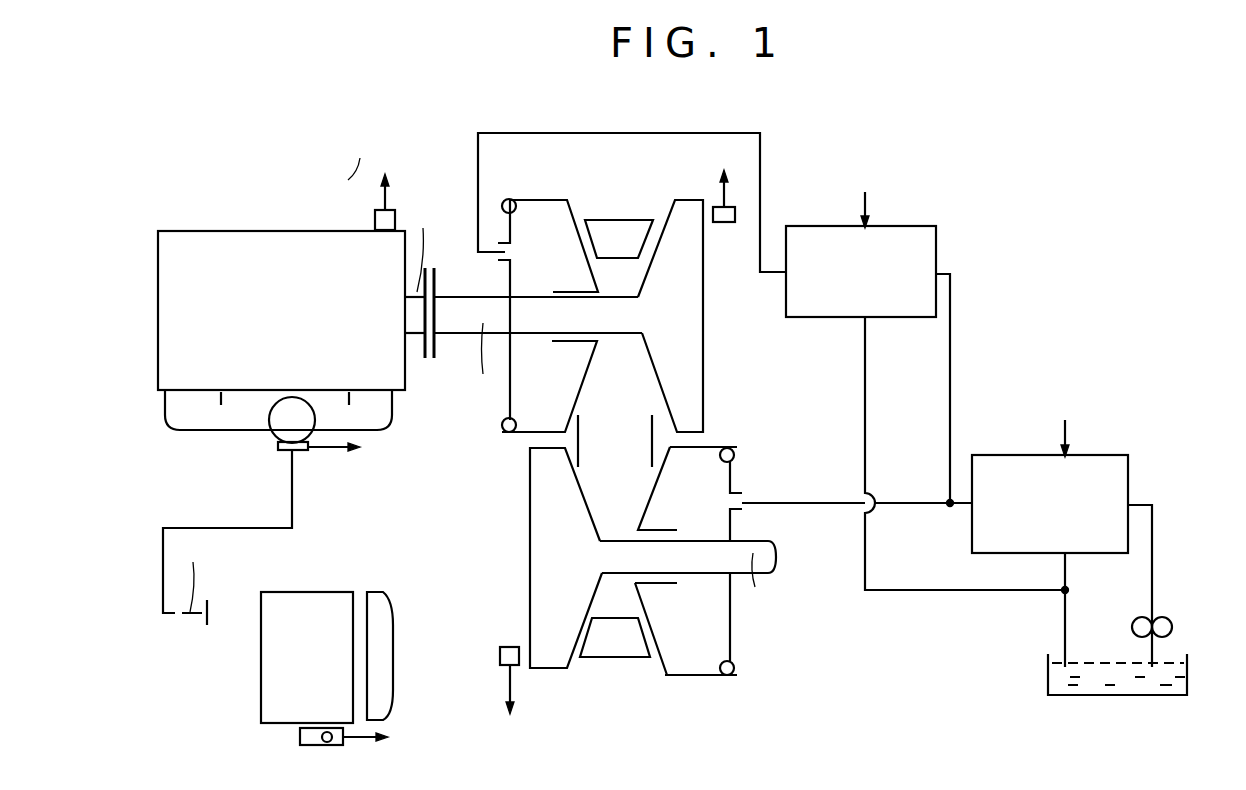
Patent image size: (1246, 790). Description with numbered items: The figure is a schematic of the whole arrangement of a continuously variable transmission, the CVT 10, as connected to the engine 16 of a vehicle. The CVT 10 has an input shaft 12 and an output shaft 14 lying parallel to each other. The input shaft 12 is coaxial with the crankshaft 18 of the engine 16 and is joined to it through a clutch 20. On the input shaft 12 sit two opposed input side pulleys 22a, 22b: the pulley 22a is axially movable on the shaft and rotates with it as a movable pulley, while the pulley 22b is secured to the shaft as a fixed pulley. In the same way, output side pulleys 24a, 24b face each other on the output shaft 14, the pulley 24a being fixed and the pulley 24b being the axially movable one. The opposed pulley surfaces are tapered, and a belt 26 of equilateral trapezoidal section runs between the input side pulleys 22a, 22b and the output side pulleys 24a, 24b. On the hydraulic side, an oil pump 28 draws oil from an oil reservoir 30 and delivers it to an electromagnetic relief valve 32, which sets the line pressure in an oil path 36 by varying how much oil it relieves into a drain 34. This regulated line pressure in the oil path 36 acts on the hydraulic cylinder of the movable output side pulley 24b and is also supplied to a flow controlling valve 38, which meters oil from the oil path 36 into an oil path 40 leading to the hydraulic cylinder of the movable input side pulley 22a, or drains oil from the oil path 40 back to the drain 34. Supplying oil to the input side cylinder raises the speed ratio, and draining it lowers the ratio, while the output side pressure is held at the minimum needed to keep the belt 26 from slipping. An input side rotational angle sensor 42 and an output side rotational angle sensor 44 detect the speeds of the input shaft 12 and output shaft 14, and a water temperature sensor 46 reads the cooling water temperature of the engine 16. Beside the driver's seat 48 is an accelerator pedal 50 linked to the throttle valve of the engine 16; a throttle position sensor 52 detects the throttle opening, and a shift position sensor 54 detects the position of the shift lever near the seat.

The CVT 10 is at (658, 166).
The input shaft 12 is at (457, 310).
The output shaft 14 is at (742, 563).
The engine 16 is at (249, 253).
The crankshaft 18 is at (417, 325).
The clutch 20 is at (437, 297).
The input side pulley 22a is at (538, 222).
The input side pulley 22b is at (683, 396).
The output side pulley 24a is at (553, 648).
The output side pulley 24b is at (698, 655).
The belt 26 is at (618, 232).
The oil pump 28 is at (1174, 627).
The oil reservoir 30 is at (1187, 678).
The relief valve 32 is at (1097, 455).
The drain 34 is at (1060, 622).
The oil path 36 is at (950, 418).
The flow controlling valve 38 is at (937, 258).
The oil path 40 is at (762, 173).
The input side rotational angle sensor 42 is at (724, 222).
The output side rotational angle sensor 44 is at (500, 657).
The water temperature sensor 46 is at (374, 218).
The driver's seat 48 is at (310, 612).
The accelerator pedal 50 is at (215, 612).
The throttle position sensor 52 is at (272, 438).
The shift position sensor 54 is at (300, 736).